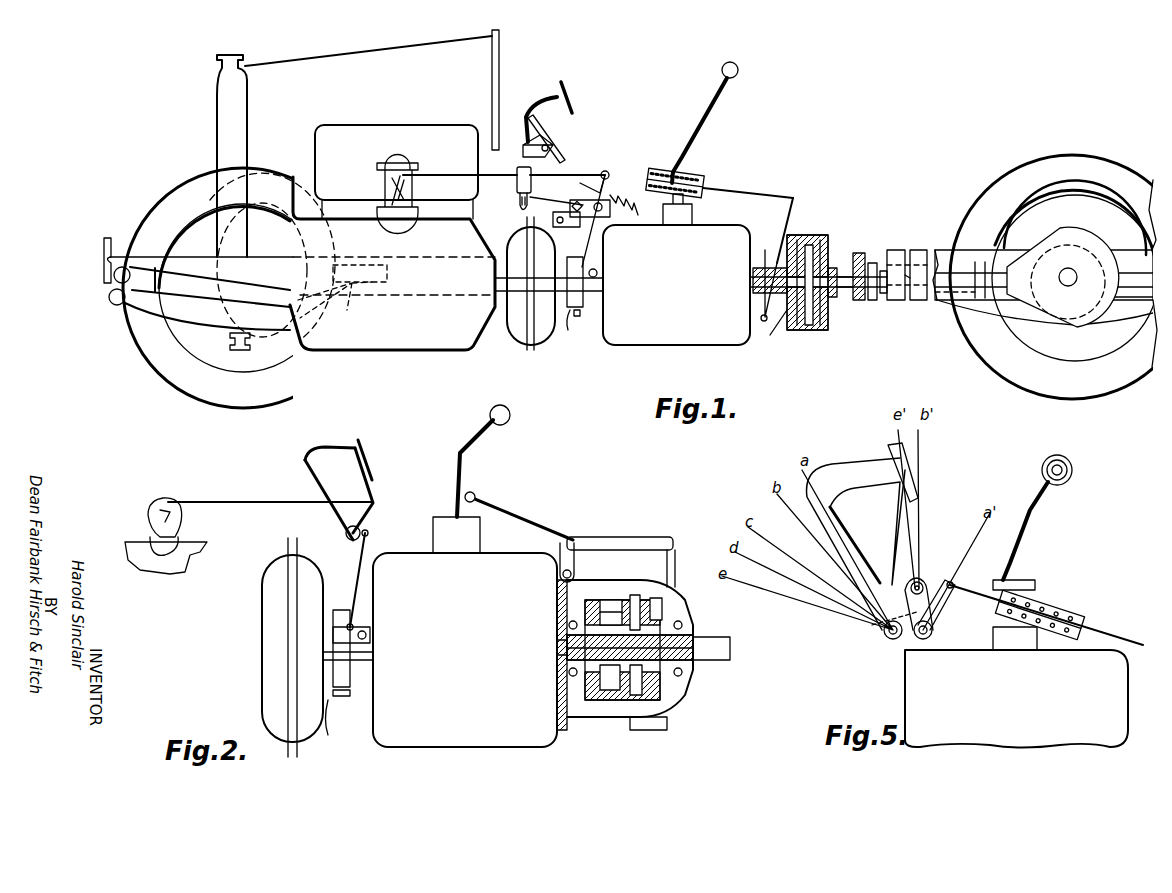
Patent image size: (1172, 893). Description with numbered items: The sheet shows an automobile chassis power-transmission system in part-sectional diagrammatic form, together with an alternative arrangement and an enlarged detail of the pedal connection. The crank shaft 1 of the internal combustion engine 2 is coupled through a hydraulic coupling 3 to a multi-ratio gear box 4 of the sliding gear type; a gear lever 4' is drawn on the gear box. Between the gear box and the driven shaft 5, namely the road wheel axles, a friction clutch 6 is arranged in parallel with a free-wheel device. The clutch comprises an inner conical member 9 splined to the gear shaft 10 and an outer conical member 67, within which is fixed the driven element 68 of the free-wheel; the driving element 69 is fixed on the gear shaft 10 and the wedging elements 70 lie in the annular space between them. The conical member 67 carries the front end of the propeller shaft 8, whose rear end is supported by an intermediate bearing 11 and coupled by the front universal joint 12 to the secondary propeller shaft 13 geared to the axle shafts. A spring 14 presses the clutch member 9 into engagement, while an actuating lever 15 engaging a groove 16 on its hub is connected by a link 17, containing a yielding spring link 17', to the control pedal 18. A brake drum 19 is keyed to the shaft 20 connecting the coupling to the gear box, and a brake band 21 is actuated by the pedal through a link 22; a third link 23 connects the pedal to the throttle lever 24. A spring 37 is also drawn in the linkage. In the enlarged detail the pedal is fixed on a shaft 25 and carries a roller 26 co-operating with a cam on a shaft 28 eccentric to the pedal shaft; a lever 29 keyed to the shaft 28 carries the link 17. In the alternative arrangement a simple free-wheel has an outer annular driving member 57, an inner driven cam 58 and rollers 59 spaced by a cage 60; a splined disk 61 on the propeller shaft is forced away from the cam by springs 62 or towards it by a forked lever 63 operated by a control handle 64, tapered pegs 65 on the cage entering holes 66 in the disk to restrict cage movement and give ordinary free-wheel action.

In FIG. 1, the crank shaft 1 is at (500, 300).
In FIG. 2, the crank shaft 1 is at (262, 655).
In FIG. 1, the internal combustion engine 2 is at (462, 340).
In FIG. 1, the hydraulic coupling 3 is at (513, 340).
In FIG. 2, the hydraulic coupling 3 is at (270, 697).
In FIG. 1, the gear box 4 is at (676, 282).
In FIG. 2, the gear box 4 is at (465, 645).
In FIG. 5, the gear box 4 is at (1022, 699).
In FIG. 1, the gear shift lever 4' is at (705, 122).
In FIG. 2, the gear shift lever 4' is at (489, 461).
In FIG. 5, the gear shift lever 4' is at (1032, 552).
In FIG. 1, the driven shaft 5 is at (1077, 277).
In FIG. 1, the friction clutch 6 is at (800, 335).
In FIG. 1, the propeller shaft 8 is at (858, 302).
In FIG. 2, the propeller shaft 8 is at (715, 640).
In FIG. 1, the inner conical member 9 is at (773, 332).
In FIG. 1, the gear shaft 10 is at (750, 284).
In FIG. 2, the gear shaft 10 is at (556, 652).
In FIG. 1, the intermediate bearing 11 is at (872, 303).
In FIG. 1, the front universal joint 12 is at (883, 295).
In FIG. 1, the secondary propeller shaft 13 is at (905, 250).
In FIG. 1, the spring 14 is at (745, 268).
In FIG. 1, the actuating lever 15 is at (790, 222).
In FIG. 1, the groove 16 is at (770, 258).
In FIG. 1, the link 17 is at (748, 183).
In FIG. 5, the link 17 is at (1046, 604).
In FIG. 1, the spring link 17' is at (689, 173).
In FIG. 5, the spring link 17' is at (1045, 611).
In FIG. 1, the control pedal 18 is at (575, 95).
In FIG. 2, the control pedal 18 is at (368, 458).
In FIG. 5, the control pedal 18 is at (850, 515).
In FIG. 1, the brake drum 19 is at (583, 290).
In FIG. 2, the brake drum 19 is at (350, 672).
In FIG. 1, the shaft 20 is at (558, 331).
In FIG. 2, the shaft 20 is at (336, 718).
In FIG. 1, the brake band 21 is at (574, 325).
In FIG. 2, the brake band 21 is at (348, 703).
In FIG. 5, the brake band 21 is at (912, 585).
In FIG. 1, the link 22 is at (606, 247).
In FIG. 2, the link 22 is at (352, 572).
In FIG. 1, the third link 23 is at (441, 172).
In FIG. 2, the third link 23 is at (247, 502).
In FIG. 2, the throttle lever 24 is at (180, 517).
In FIG. 5, the shaft 25 is at (890, 640).
In FIG. 5, the roller 26 is at (920, 585).
In FIG. 5, the shaft 28 is at (925, 640).
In FIG. 5, the lever 29 is at (950, 607).
In FIG. 1, the spring 37 is at (638, 212).
In FIG. 2, the outer annular driving member 57 is at (611, 600).
In FIG. 2, the inner driven cam 58 is at (579, 562).
In FIG. 2, the rollers 59 is at (608, 537).
In FIG. 2, the cage 60 is at (612, 700).
In FIG. 2, the disk 61 is at (660, 600).
In FIG. 2, the springs 62 is at (636, 595).
In FIG. 2, the forked lever 63 is at (700, 660).
In FIG. 2, the control handle 64 is at (540, 520).
In FIG. 2, the tapered pegs 65 is at (648, 730).
In FIG. 2, the holes 66 is at (650, 690).
In FIG. 1, the outer conical member 67 is at (808, 236).
In FIG. 1, the driven element 68 is at (826, 250).
In FIG. 1, the driving element 69 is at (862, 252).
In FIG. 1, the wedging elements 70 is at (835, 300).